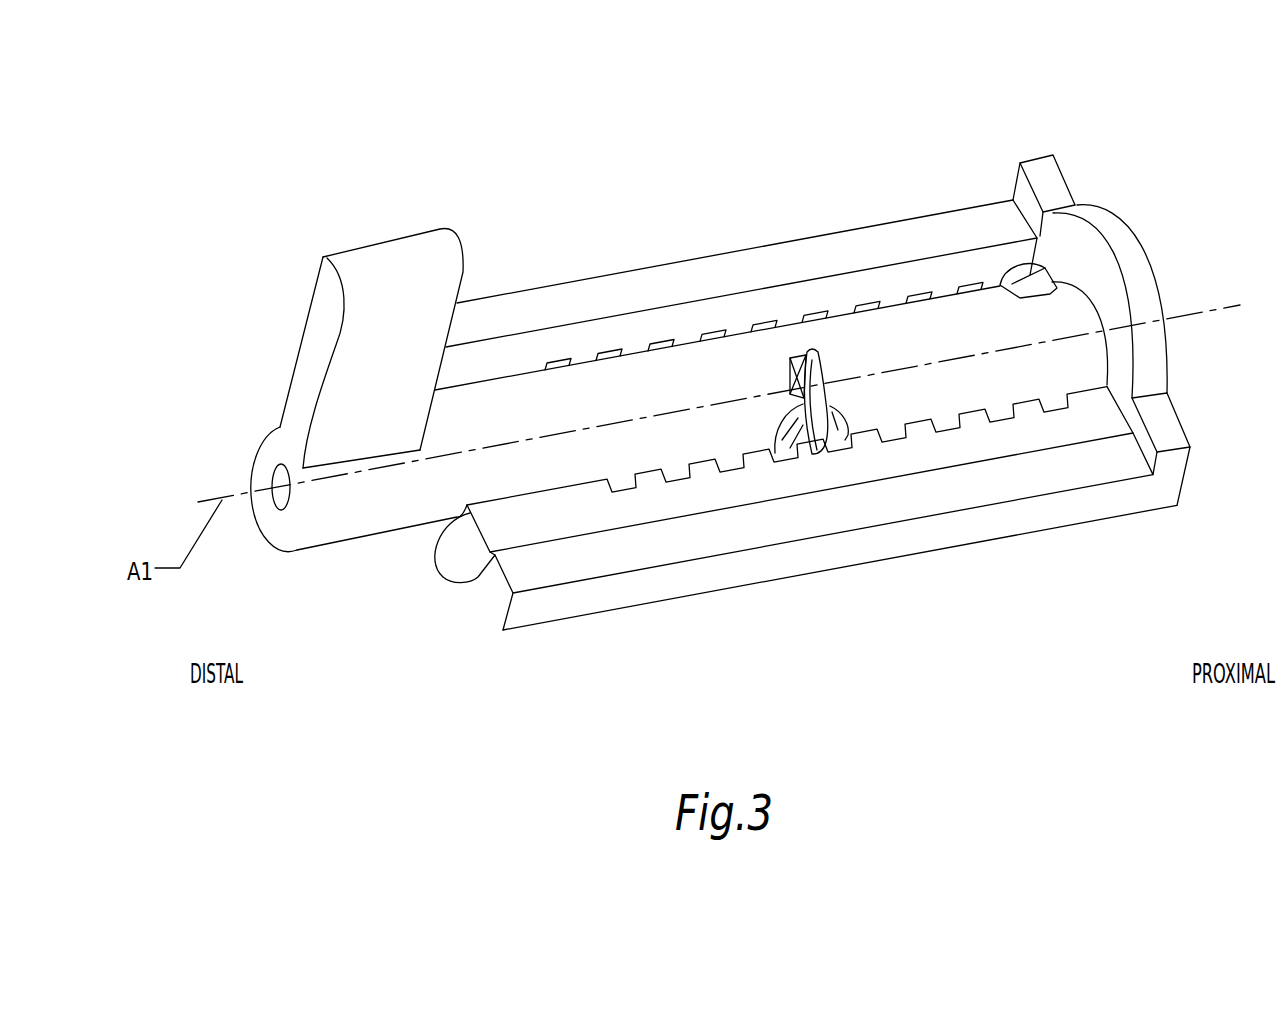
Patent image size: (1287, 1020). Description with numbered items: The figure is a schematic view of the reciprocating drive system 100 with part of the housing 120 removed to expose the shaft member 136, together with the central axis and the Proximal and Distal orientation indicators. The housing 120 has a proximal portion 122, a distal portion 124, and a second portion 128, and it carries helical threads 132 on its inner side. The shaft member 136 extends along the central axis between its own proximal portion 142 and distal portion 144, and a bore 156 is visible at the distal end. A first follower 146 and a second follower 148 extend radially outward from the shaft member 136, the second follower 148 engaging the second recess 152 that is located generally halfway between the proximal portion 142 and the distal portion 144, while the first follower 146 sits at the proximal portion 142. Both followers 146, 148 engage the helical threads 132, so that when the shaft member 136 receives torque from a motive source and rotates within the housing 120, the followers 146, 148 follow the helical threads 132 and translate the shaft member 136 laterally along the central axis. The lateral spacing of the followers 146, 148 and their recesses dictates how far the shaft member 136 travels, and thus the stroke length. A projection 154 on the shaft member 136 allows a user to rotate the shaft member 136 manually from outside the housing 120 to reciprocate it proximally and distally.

The reciprocating drive system 100 is at (393, 117).
The housing 120 is at (692, 588).
The proximal portion 122 is at (1147, 493).
The distal portion 124 is at (523, 612).
The second portion 128 is at (603, 613).
The helical threads 132 is at (1013, 262).
The shaft member 136 is at (722, 432).
The proximal portion 142 is at (1050, 325).
The distal portion 144 is at (530, 408).
The first follower 146 is at (1055, 290).
The second follower 148 is at (821, 375).
The second recess 152 is at (795, 368).
The projection 154 is at (433, 244).
The bore 156 is at (265, 510).